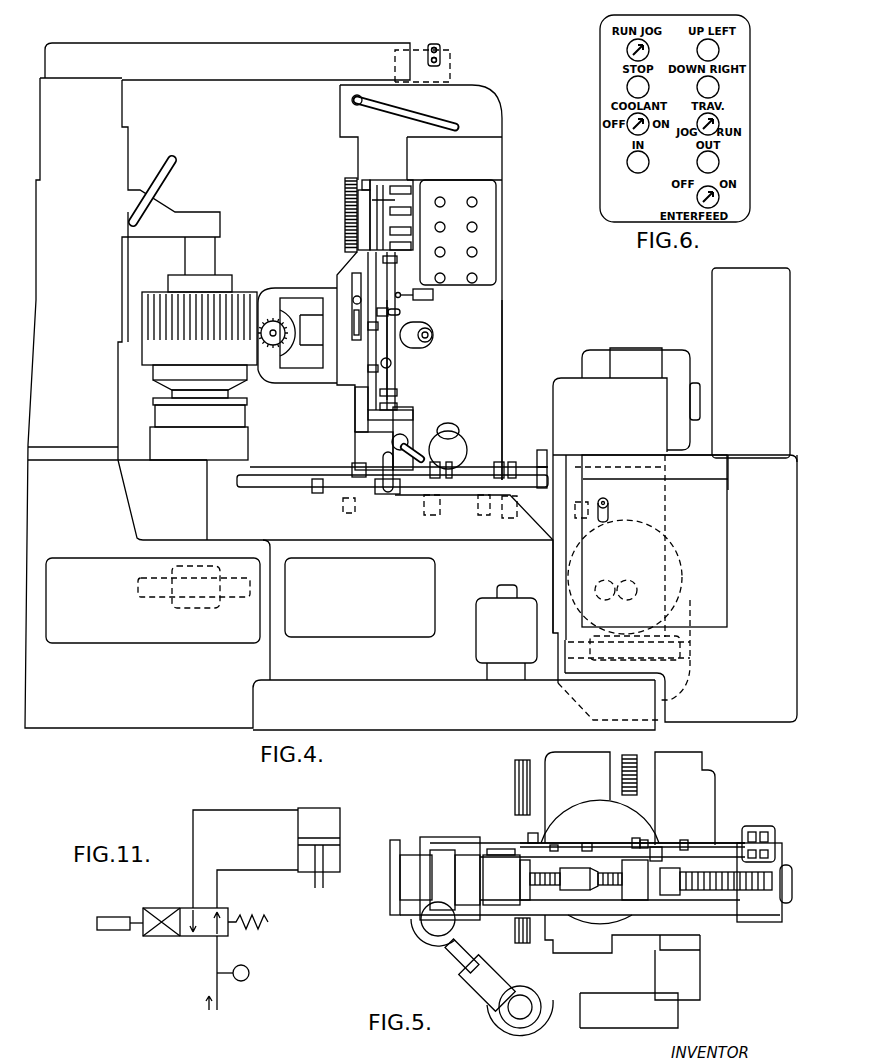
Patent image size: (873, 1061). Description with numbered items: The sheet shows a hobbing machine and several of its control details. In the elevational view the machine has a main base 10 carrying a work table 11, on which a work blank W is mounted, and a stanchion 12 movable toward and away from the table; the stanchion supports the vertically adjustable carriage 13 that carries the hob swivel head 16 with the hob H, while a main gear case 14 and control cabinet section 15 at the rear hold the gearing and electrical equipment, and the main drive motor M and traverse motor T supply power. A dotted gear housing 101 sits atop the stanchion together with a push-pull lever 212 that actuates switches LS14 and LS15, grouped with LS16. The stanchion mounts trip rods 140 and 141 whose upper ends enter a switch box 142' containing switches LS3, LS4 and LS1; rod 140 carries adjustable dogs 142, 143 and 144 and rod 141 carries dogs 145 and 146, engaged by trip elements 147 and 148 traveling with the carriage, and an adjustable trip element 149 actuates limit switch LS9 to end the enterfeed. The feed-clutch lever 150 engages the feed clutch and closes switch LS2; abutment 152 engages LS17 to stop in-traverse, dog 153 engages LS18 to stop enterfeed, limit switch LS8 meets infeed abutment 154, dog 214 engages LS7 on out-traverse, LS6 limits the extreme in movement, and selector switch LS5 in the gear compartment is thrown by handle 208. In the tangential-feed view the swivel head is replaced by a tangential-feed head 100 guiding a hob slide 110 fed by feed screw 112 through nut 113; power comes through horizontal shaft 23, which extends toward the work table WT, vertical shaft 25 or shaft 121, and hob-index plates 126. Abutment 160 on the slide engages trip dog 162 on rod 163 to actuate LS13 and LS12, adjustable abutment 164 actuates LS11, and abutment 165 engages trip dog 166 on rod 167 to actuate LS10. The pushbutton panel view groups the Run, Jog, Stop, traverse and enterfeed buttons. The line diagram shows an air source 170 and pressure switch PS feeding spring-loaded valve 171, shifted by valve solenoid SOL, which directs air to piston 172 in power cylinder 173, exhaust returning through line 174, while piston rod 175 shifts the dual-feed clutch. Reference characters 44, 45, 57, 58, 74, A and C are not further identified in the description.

In FIG. 4, the main base 10 is at (411, 386).
In FIG. 5, the main base 10 is at (629, 1010).
In FIG. 4, the work table 11 is at (199, 429).
In FIG. 4, the stanchion 12 is at (502, 370).
In FIG. 5, the stanchion 12 is at (695, 980).
In FIG. 4, the hob-swivel-head carriage 13 is at (343, 275).
In FIG. 5, the hob-swivel-head carriage 13 is at (712, 775).
In FIG. 4, the main gear case 14 is at (654, 541).
In FIG. 4, the control cabinet section 15 is at (751, 363).
In FIG. 4, the hob swivel head 16 is at (284, 288).
In FIG. 5, the horizontal shaft 23 is at (512, 1015).
In FIG. 5, the vertical shaft 25 is at (515, 767).
In FIG. 4, the motor 44 is at (199, 608).
In FIG. 4, the pump 45 is at (141, 597).
In FIG. 4, the push button 57 is at (605, 580).
In FIG. 4, the push button 58 is at (628, 580).
In FIG. 4, the rack 74 is at (345, 205).
In FIG. 5, the rack 74 is at (640, 760).
In FIG. 5, the tangential-feed head 100 is at (463, 845).
In FIG. 4, the gear housing 101 is at (450, 70).
In FIG. 5, the hob slide 110 is at (500, 898).
In FIG. 5, the feed screw 112 is at (735, 892).
In FIG. 5, the nut 113 is at (680, 892).
In FIG. 5, the shaft 121 is at (458, 952).
In FIG. 5, the hob-index plates 126 is at (395, 915).
In FIG. 4, the trip rod 140 is at (372, 397).
In FIG. 4, the trip rod 141 is at (395, 378).
In FIG. 4, the adjustable dog 142 is at (357, 374).
In FIG. 4, the switch box 142' is at (335, 179).
In FIG. 4, the adjustable dog 143 is at (370, 334).
In FIG. 4, the adjustable dog 144 is at (365, 246).
In FIG. 4, the dog 145 is at (398, 393).
In FIG. 4, the dog 146 is at (397, 262).
In FIG. 4, the trip element 147 is at (433, 339).
In FIG. 4, the trip element 148 is at (392, 363).
In FIG. 4, the adjustable trip element 149 is at (400, 312).
In FIG. 4, the feed-clutch lever 150 is at (388, 494).
In FIG. 4, the abutment 152 is at (497, 462).
In FIG. 4, the abutment dog 153 is at (453, 466).
In FIG. 4, the infeed limiting abutment 154 is at (316, 493).
In FIG. 5, the abutment 160 is at (660, 853).
In FIG. 5, the trip dog 162 is at (682, 845).
In FIG. 5, the rod 163 is at (710, 847).
In FIG. 5, the adjustable abutment 164 is at (500, 850).
In FIG. 5, the abutment 165 is at (554, 845).
In FIG. 5, the trip dog 166 is at (587, 843).
In FIG. 5, the rod 167 is at (630, 838).
In FIG. 11, the source of air under pressure 170 is at (217, 1007).
In FIG. 11, the spring-loaded valve 171 is at (180, 908).
In FIG. 11, the piston 172 is at (298, 845).
In FIG. 11, the power cylinder 173 is at (298, 826).
In FIG. 11, the line 174 is at (193, 848).
In FIG. 11, the piston rod 175 is at (315, 886).
In FIG. 4, the manually-operable handle 208 is at (610, 512).
In FIG. 4, the push-pull lever 212 is at (441, 57).
In FIG. 4, the dog 214 is at (418, 493).
In FIG. 11, the valve port A is at (192, 948).
In FIG. 4, the coolant pump C is at (476, 606).
In FIG. 4, the hob H is at (268, 318).
In FIG. 5, the hob H is at (589, 880).
In FIG. 4, the main drive motor M is at (680, 563).
In FIG. 11, the pressure switch PS is at (249, 973).
In FIG. 11, the valve solenoid SOL is at (120, 915).
In FIG. 4, the traverse motor T is at (626, 490).
In FIG. 4, the work blank W is at (199, 301).
In FIG. 4, the work table WT is at (148, 375).
In FIG. 4, the limit switch LS1 is at (405, 230).
In FIG. 4, the feed-clutch interlocking switch LS2 is at (541, 450).
In FIG. 4, the limit switch LS3 is at (396, 186).
In FIG. 4, the limit switch LS4 is at (405, 207).
In FIG. 4, the selector switch LS5 is at (575, 510).
In FIG. 4, the limit switch LS6 is at (348, 514).
In FIG. 4, the limit switch LS7 is at (514, 517).
In FIG. 4, the limit switch LS8 is at (352, 467).
In FIG. 4, the limit switch LS9 is at (433, 297).
In FIG. 5, the limit switch LS10 is at (752, 832).
In FIG. 5, the limit switch LS11 is at (530, 835).
In FIG. 5, the limit switch LS12 is at (752, 862).
In FIG. 5, the limit switch LS13 is at (770, 842).
In FIG. 4, the push-pull switch LS14 is at (436, 47).
In FIG. 4, the limit switch LS15 is at (434, 50).
In FIG. 4, the limit switch LS16 is at (434, 60).
In FIG. 4, the limit switch LS17 is at (480, 513).
In FIG. 4, the limit switch LS18 is at (437, 513).